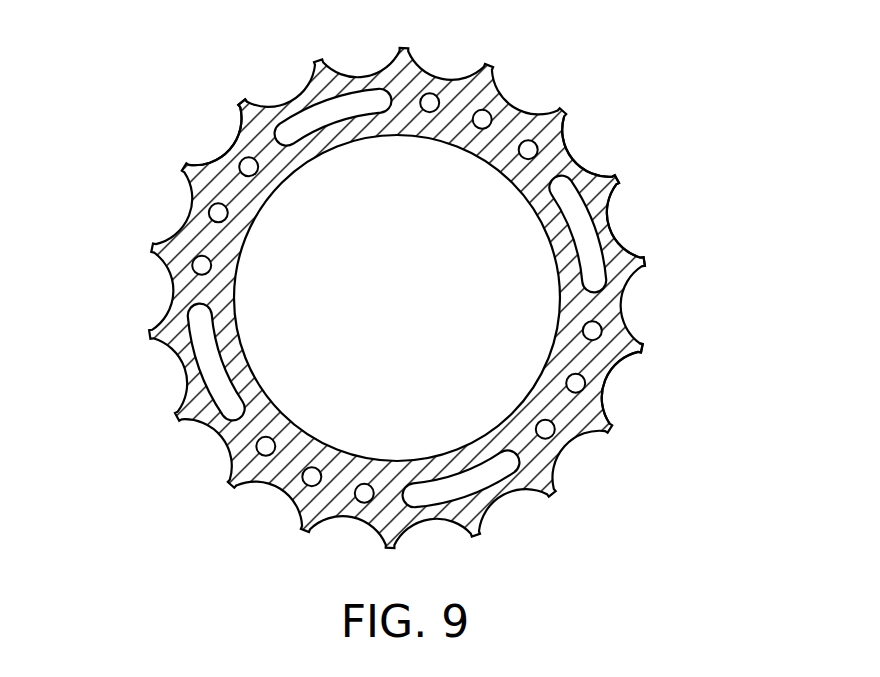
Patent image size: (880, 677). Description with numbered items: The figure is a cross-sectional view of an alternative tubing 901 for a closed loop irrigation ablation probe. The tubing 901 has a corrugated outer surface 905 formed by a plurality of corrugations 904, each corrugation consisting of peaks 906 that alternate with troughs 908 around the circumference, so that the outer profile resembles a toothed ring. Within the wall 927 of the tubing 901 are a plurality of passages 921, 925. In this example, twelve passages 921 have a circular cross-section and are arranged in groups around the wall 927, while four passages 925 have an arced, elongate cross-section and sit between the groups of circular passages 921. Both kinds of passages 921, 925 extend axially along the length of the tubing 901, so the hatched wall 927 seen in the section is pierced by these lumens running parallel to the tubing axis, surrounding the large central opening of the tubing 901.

The tubing 901 is at (485, 88).
The corrugations 904 is at (625, 86).
The corrugated outer surface 905 is at (607, 170).
The peaks 906 is at (226, 93).
The troughs 908 is at (210, 145).
The passages 921 is at (432, 100).
The passages 925 is at (363, 88).
The wall 927 is at (200, 300).